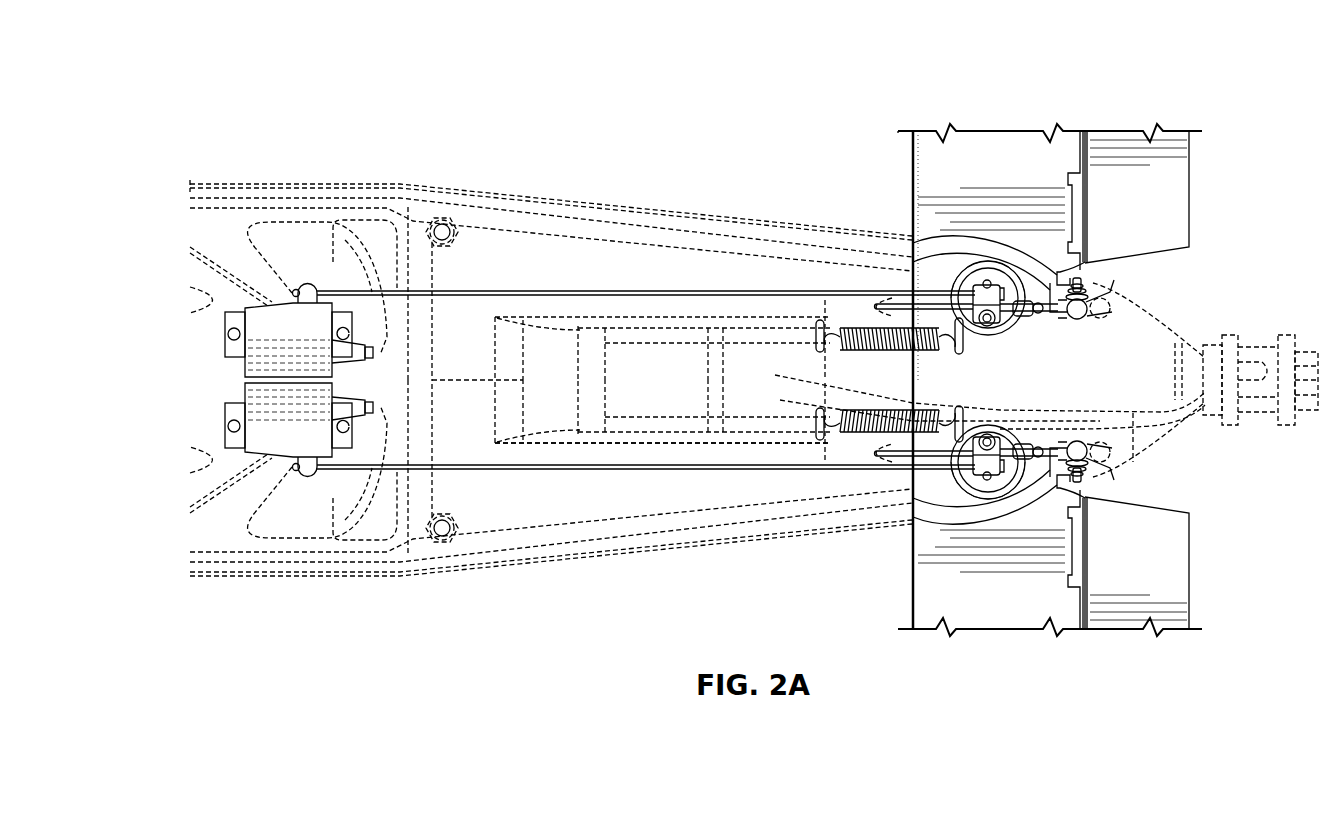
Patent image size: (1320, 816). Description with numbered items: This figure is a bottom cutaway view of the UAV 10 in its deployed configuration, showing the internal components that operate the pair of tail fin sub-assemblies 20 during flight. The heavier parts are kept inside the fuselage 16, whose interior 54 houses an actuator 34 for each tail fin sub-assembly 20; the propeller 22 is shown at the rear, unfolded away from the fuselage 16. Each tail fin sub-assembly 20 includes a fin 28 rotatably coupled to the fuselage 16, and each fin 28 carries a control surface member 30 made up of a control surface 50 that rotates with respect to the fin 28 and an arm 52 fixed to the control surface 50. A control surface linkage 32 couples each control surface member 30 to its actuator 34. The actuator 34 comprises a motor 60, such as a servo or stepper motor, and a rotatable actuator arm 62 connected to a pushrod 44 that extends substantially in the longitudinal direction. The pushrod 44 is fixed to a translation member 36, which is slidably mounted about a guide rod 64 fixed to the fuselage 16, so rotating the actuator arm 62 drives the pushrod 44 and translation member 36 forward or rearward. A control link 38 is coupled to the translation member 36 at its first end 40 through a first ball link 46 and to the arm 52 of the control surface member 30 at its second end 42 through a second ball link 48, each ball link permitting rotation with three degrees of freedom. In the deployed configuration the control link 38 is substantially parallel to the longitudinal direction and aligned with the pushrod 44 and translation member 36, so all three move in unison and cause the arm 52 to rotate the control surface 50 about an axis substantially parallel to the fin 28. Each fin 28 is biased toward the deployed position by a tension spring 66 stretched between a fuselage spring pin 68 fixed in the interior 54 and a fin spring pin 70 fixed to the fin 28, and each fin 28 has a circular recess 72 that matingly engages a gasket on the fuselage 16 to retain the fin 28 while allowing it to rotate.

The UAV 10 is at (412, 95).
The fuselage 16 is at (262, 185).
The tail fin sub-assembly 20 is at (911, 172).
The propeller 22 is at (1172, 322).
The fin 28 is at (1000, 137).
The control surface member 30 is at (1125, 141).
The control surface linkage 32 is at (1003, 285).
The actuator 34 is at (280, 302).
The translation member 36 is at (988, 284).
The control link 38 is at (1032, 318).
The first end 40 is at (998, 316).
The second end 42 is at (1077, 328).
The pushrod 44 is at (597, 291).
The first ball link 46 is at (988, 322).
The second ball link 48 is at (1095, 318).
The control surface 50 is at (1178, 195).
The arm 52 is at (1097, 275).
The interior 54 is at (532, 262).
The motor 60 is at (272, 329).
The actuator arm 62 is at (313, 285).
The guide rod 64 is at (897, 304).
The tension spring 66 is at (850, 326).
The fuselage spring pin 68 is at (820, 346).
The fin spring pin 70 is at (960, 340).
The circular recess 72 is at (993, 293).